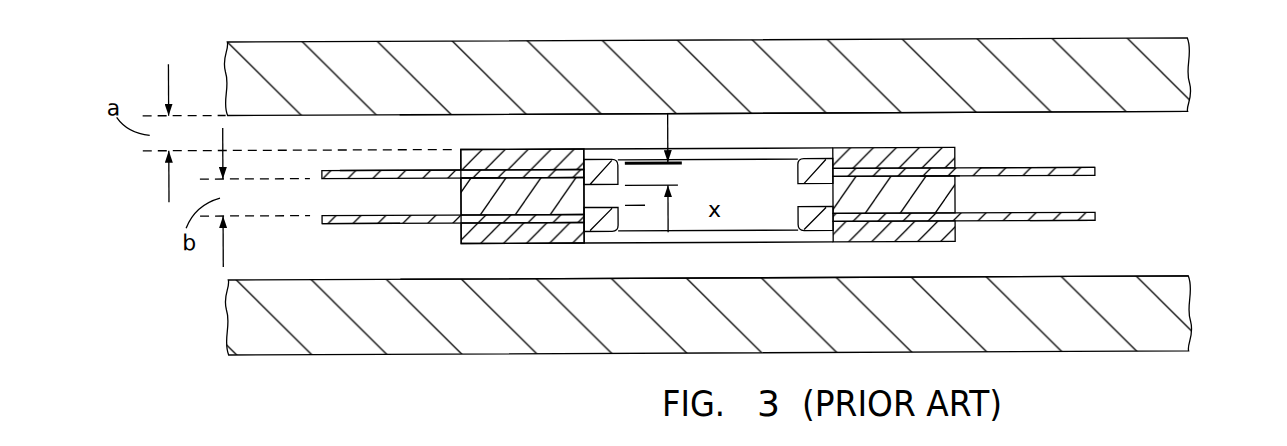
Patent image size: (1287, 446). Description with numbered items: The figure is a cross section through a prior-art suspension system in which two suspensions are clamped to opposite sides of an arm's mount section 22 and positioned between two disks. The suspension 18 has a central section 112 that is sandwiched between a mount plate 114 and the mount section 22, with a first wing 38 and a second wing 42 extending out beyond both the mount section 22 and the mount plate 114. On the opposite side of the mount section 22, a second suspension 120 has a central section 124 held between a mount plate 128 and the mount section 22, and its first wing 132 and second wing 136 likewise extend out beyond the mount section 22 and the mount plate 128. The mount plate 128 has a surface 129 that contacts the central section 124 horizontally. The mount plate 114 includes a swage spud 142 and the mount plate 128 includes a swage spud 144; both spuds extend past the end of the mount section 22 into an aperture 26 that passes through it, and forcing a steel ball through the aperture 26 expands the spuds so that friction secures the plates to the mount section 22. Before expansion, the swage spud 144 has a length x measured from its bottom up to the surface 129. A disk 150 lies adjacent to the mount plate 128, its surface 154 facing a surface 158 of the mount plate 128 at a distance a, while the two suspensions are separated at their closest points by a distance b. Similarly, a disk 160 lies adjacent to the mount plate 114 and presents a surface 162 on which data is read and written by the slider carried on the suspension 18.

The disk 150 is at (267, 47).
The surface of disk 154 is at (1172, 115).
The disk 160 is at (272, 336).
The surface of disk 162 is at (1172, 278).
The surface of mount plate 129 is at (462, 149).
The surface of mount plate 158 is at (537, 148).
The central section 112 is at (461, 225).
The mount plate 114 is at (492, 244).
The second suspension 120 is at (325, 180).
The suspension 18 is at (320, 219).
The first wing 132 is at (361, 167).
The central section 124 is at (424, 168).
The second wing 136 is at (1057, 168).
The mount section 22 is at (462, 180).
The first wing 38 is at (346, 224).
The second wing 42 is at (1057, 224).
The mount plate 128 is at (557, 148).
The swage spud 142 is at (800, 228).
The swage spud 144 is at (597, 159).
The aperture 26 is at (723, 167).